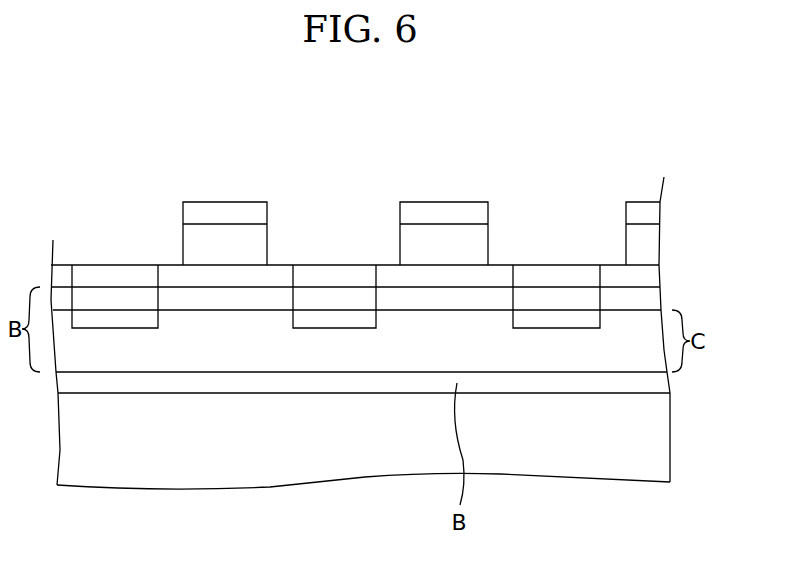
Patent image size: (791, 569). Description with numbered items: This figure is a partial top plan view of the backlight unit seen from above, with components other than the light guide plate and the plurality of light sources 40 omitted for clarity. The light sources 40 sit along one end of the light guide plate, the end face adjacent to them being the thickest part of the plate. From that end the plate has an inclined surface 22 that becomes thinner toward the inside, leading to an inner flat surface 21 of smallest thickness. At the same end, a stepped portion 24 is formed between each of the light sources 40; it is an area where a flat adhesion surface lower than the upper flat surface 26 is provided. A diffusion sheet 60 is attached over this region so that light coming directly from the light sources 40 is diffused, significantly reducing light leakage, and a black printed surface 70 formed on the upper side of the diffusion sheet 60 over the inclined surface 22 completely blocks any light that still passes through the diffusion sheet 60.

The inner flat surface 21 is at (365, 453).
The inclined surface 22 is at (222, 347).
The stepped portion 24 is at (111, 276).
The upper flat surface 26 is at (278, 276).
The light sources 40 is at (224, 216).
The diffusion sheet 60 is at (612, 394).
The black printed surface 70 is at (645, 373).